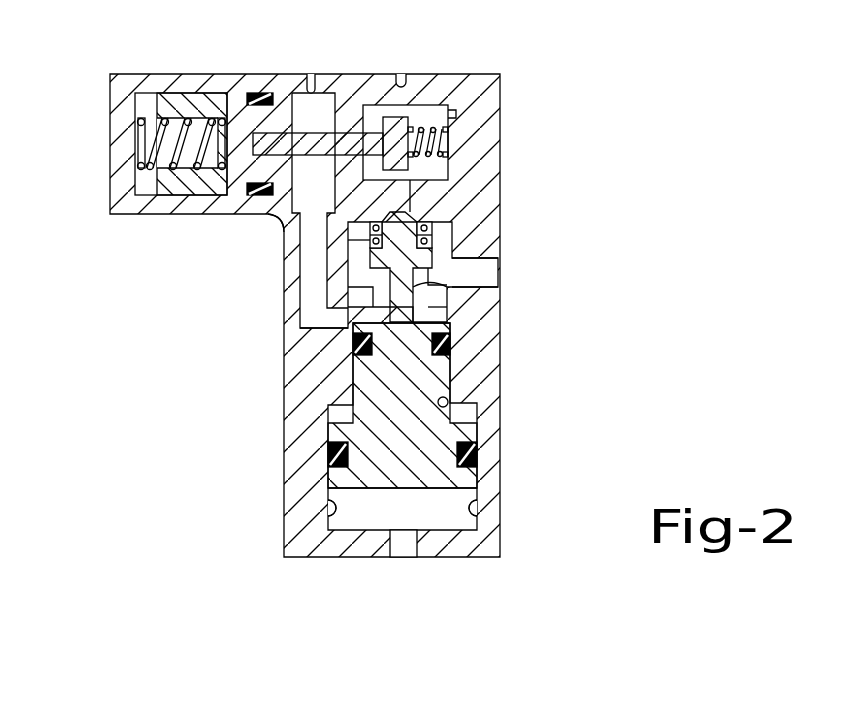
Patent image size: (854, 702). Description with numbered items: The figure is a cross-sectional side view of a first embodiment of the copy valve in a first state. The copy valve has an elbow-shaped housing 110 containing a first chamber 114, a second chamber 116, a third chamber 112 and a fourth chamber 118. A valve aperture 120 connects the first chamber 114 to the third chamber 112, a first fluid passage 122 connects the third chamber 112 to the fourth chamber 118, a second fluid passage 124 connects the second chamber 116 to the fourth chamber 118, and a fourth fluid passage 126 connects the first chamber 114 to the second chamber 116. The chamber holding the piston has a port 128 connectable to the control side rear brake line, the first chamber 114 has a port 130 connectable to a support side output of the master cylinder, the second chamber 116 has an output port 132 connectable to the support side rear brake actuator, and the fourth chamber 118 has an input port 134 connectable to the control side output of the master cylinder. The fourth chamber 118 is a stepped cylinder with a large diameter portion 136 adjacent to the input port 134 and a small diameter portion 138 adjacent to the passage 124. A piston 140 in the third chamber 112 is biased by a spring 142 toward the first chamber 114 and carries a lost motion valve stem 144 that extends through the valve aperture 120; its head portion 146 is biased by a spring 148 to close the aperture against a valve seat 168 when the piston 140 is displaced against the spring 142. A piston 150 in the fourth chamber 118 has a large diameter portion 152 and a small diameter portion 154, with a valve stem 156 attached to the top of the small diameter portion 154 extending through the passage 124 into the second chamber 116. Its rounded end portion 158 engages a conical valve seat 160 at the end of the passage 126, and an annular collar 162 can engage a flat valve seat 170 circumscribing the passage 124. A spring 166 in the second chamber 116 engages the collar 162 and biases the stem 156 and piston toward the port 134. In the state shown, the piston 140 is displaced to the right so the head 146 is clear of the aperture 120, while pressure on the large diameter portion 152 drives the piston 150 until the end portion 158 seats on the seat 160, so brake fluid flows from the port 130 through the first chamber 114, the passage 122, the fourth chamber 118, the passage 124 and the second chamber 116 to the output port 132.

The housing 110 is at (305, 347).
The third chamber 112 is at (312, 92).
The first chamber 114 is at (450, 112).
The second chamber 116 is at (450, 270).
The fourth chamber 118 is at (478, 528).
The valve aperture 120 is at (350, 125).
The first fluid passage 122 is at (300, 283).
The second fluid passage 124 is at (430, 310).
The fourth fluid passage 126 is at (407, 210).
The port 128 is at (125, 128).
The port 130 is at (403, 85).
The output port 132 is at (455, 262).
The input port 134 is at (404, 548).
The large diameter portion 136 is at (343, 520).
The small diameter portion 138 is at (460, 405).
The piston 140 is at (197, 93).
The spring 142 is at (155, 97).
The lost motion valve stem 144 is at (278, 216).
The head portion 146 is at (437, 127).
The spring 148 is at (440, 128).
The piston 150 is at (370, 520).
The large diameter portion 152 is at (337, 476).
The small diameter portion 154 is at (353, 333).
The valve stem 156 is at (430, 308).
The rounded end portion 158 is at (432, 222).
The conical valve seat 160 is at (360, 240).
The annular collar 162 is at (430, 263).
The spring 166 is at (437, 237).
The valve seat 168 is at (372, 127).
The flat valve seat 170 is at (353, 335).